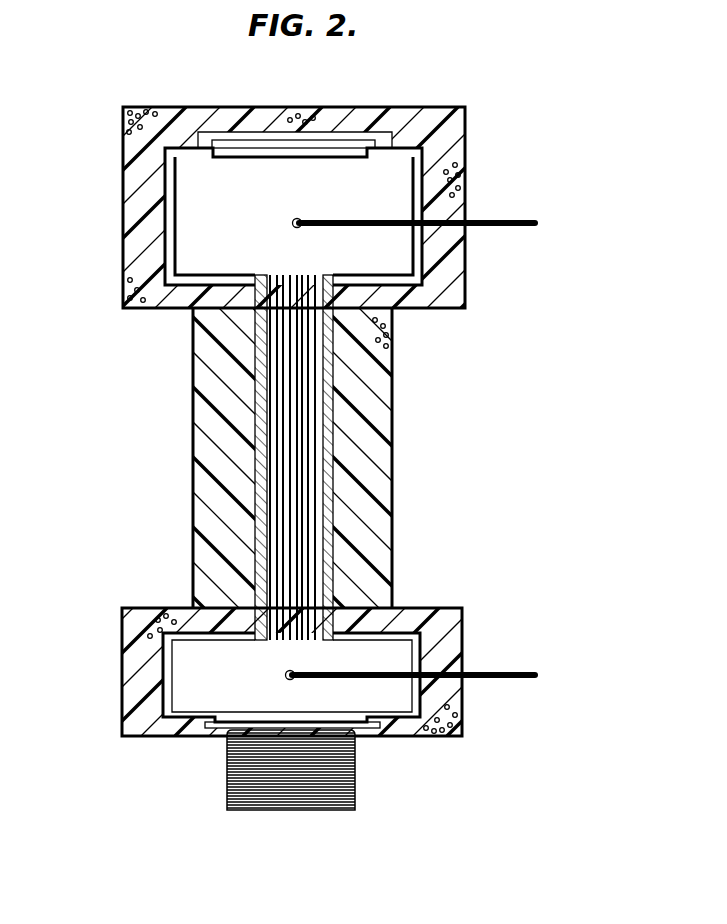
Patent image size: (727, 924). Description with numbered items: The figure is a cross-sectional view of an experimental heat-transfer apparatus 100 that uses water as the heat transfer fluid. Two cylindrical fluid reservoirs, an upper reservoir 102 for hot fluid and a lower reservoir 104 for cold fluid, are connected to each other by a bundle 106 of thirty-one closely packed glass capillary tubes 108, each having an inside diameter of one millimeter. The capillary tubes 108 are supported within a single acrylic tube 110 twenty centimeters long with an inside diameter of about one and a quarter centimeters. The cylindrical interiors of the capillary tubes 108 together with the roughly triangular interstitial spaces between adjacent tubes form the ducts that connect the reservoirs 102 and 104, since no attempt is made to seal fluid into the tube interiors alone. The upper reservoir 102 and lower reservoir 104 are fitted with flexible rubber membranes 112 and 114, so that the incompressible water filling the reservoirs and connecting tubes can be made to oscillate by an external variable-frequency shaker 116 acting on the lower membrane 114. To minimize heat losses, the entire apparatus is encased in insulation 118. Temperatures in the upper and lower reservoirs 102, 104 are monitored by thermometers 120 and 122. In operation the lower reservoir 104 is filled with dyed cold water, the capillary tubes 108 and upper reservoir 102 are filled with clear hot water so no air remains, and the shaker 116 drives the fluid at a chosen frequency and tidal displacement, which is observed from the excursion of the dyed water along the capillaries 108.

The experimental apparatus 100 is at (514, 67).
The upper fluid reservoir 102 is at (185, 256).
The lower fluid reservoir 104 is at (185, 690).
The bundle of capillary tubes 106 is at (333, 383).
The glass capillary tubes 108 is at (287, 415).
The acrylic tube 110 is at (255, 525).
The flexible rubber membrane 112 is at (354, 142).
The flexible rubber membrane 114 is at (224, 728).
The external variable-frequency shaker 116 is at (345, 810).
The insulation 118 is at (373, 527).
The thermometer 120 is at (500, 671).
The thermometer 122 is at (516, 218).